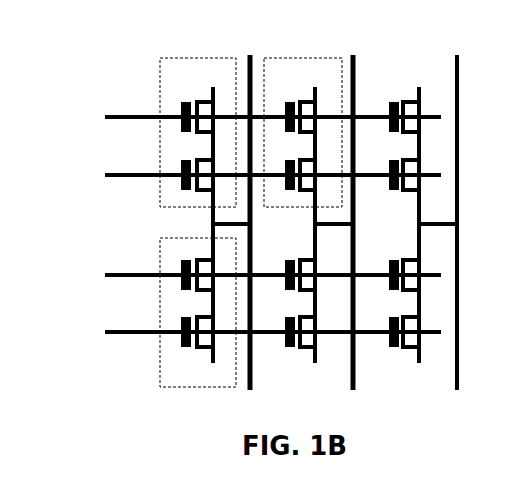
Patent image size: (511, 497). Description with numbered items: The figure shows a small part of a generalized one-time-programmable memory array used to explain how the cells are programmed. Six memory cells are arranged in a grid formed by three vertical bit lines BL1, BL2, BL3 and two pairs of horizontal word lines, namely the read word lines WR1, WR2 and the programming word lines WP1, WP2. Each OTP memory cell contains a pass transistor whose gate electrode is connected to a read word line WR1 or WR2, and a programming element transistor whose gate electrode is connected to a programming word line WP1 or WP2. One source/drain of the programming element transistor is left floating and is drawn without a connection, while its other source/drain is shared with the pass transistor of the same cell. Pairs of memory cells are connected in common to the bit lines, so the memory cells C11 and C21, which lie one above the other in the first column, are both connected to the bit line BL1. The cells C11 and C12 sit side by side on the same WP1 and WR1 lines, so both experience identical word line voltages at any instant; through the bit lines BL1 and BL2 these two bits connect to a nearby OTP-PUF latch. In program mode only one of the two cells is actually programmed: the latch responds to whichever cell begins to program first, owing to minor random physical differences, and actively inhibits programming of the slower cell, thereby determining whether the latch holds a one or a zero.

The programming word line WP1 is at (247, 120).
The read word line WR1 is at (247, 176).
The read word line WR2 is at (247, 276).
The programming word line WP2 is at (247, 339).
The bit line BL1 is at (253, 211).
The bit line BL2 is at (355, 211).
The bit line BL3 is at (458, 211).
The OTP memory cell C11 is at (198, 132).
The OTP memory cell C12 is at (303, 132).
The OTP memory cell C21 is at (198, 312).